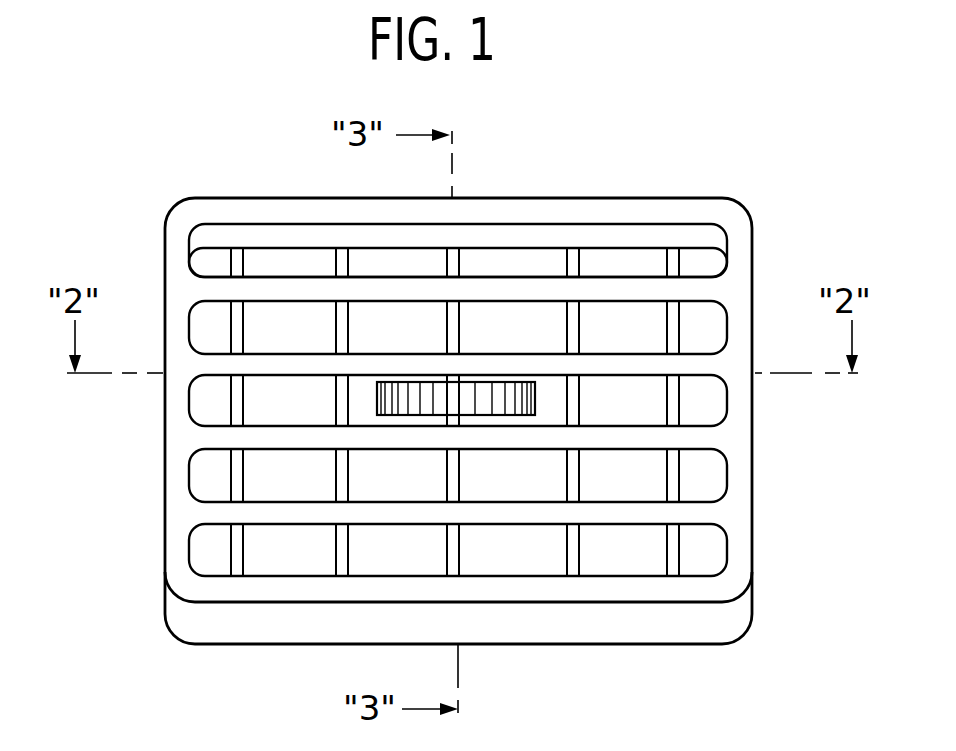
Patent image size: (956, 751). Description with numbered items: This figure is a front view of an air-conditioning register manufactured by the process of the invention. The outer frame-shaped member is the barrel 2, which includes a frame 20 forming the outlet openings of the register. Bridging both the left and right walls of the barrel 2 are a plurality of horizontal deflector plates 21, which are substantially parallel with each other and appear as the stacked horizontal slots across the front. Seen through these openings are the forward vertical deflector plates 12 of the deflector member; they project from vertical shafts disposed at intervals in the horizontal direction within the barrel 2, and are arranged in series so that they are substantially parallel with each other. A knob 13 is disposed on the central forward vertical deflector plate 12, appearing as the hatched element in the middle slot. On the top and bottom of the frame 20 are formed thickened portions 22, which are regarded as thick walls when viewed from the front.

The barrel 2 is at (673, 190).
The forward vertical deflector plates 12 is at (677, 335).
The knob 13 is at (377, 400).
The frame 20 is at (738, 445).
The horizontal deflector plates 21 is at (526, 288).
The thickened portions 22 is at (712, 623).